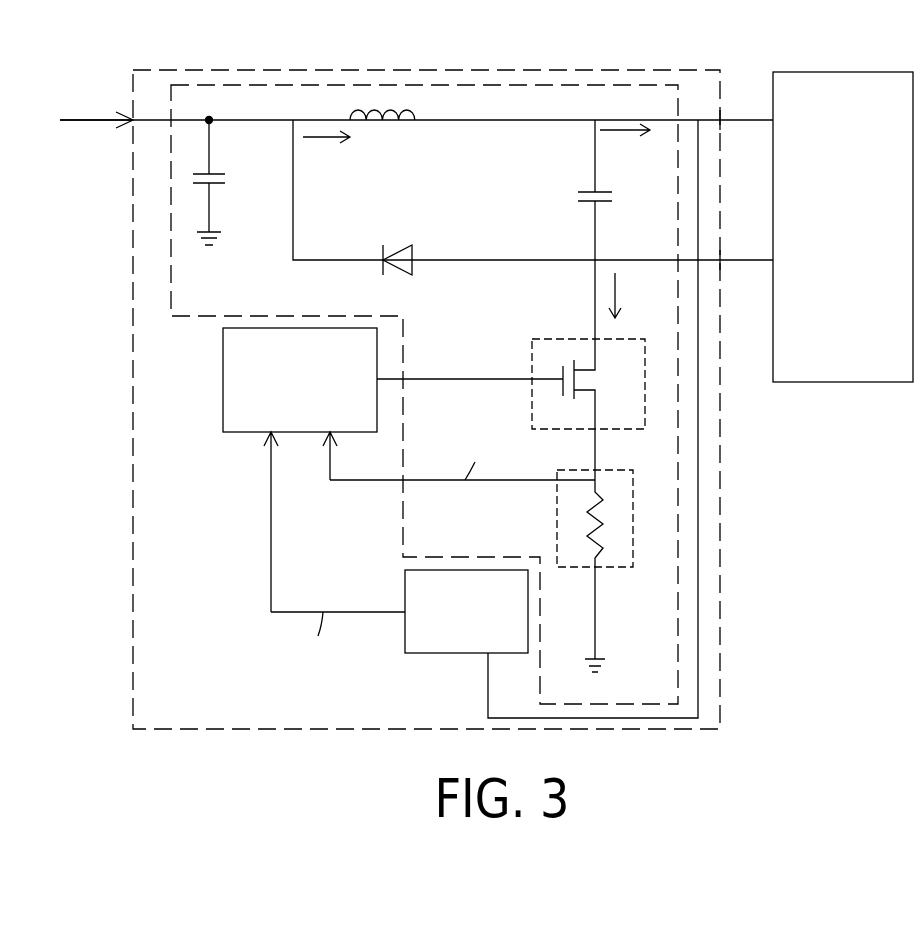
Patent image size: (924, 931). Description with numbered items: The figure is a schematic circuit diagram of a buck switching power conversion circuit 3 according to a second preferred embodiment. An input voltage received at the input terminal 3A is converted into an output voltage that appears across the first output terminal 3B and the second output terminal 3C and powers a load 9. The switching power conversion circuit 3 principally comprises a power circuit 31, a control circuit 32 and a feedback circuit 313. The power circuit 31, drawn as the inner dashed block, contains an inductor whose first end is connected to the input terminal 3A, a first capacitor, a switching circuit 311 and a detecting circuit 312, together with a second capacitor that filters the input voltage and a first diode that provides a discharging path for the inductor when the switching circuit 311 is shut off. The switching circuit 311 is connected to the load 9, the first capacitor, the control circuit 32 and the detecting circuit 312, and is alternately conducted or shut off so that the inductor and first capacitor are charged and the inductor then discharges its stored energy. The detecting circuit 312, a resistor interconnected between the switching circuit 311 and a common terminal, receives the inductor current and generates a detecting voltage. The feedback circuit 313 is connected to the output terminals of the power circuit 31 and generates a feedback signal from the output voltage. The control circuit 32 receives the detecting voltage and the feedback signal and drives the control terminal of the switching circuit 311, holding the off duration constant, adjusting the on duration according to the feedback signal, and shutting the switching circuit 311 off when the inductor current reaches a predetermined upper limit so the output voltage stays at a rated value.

The switching power conversion circuit 3 is at (620, 70).
The power circuit 31 is at (416, 362).
The control circuit 32 is at (223, 380).
The switching circuit 311 is at (555, 339).
The detecting circuit 312 is at (557, 530).
The feedback circuit 313 is at (440, 655).
The input terminal 3A is at (132, 118).
The first output terminal 3B is at (722, 120).
The second output terminal 3C is at (720, 260).
The load 9 is at (878, 72).